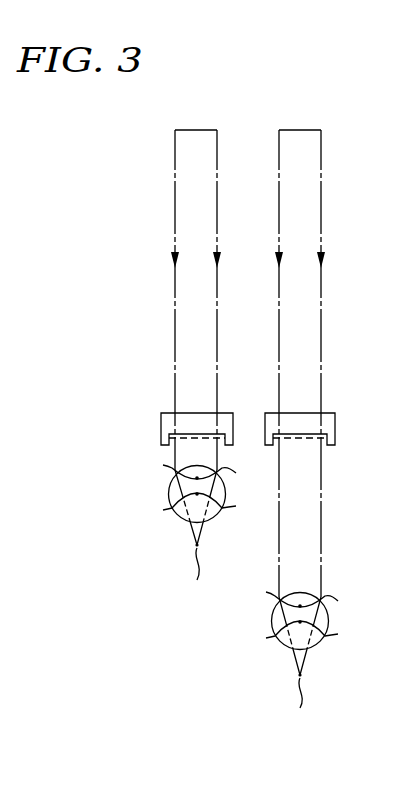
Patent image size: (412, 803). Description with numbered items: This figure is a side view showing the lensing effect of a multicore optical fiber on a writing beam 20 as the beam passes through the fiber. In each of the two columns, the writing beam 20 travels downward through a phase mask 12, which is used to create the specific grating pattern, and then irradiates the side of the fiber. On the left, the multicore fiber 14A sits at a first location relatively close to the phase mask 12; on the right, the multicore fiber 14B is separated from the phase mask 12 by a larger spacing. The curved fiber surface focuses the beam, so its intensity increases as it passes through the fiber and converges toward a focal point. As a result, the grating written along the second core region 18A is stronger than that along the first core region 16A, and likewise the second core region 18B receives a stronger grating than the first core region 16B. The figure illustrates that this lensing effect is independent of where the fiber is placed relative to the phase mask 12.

The writing beam 20 is at (196, 136).
The phase mask 12 is at (161, 427).
The multicore fiber 14A is at (181, 520).
The multicore fiber 14B is at (284, 648).
The first core region 16A is at (187, 467).
The second core region 18A is at (187, 507).
The first core region 16B is at (291, 594).
The second core region 18B is at (291, 636).